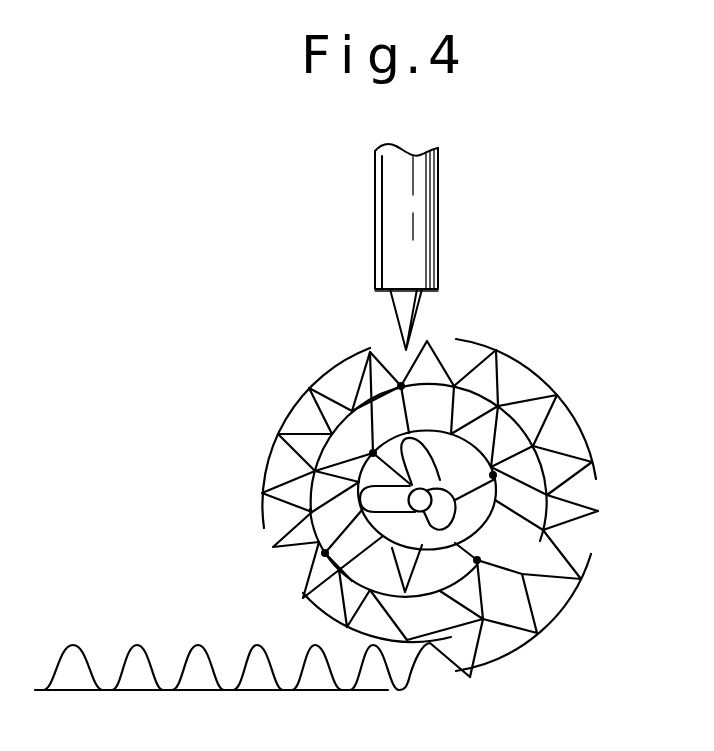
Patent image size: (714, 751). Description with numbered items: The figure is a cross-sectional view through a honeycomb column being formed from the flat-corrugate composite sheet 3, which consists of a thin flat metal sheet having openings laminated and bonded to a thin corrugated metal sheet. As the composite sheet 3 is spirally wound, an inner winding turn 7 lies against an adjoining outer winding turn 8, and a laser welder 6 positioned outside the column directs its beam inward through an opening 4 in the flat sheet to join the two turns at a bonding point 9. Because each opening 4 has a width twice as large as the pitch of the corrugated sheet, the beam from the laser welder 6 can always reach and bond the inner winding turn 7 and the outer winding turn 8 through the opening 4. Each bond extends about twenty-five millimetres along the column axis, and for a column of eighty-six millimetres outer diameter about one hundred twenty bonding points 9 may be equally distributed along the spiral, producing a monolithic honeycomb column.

The flat-corrugate composite sheet 3 is at (195, 644).
The opening 4 is at (395, 350).
The laser welder 6 is at (440, 216).
The inner winding turn 7 is at (335, 381).
The outer winding turn 8 is at (345, 362).
The bonding point 9 is at (445, 350).